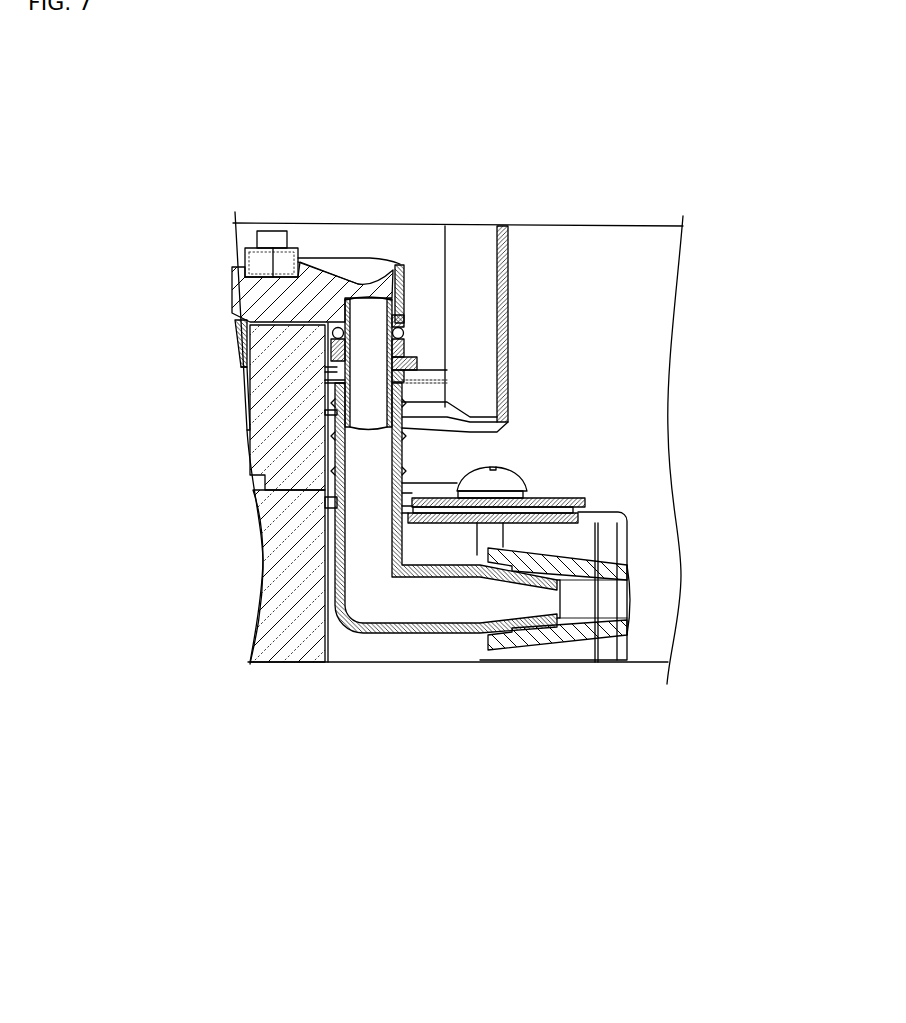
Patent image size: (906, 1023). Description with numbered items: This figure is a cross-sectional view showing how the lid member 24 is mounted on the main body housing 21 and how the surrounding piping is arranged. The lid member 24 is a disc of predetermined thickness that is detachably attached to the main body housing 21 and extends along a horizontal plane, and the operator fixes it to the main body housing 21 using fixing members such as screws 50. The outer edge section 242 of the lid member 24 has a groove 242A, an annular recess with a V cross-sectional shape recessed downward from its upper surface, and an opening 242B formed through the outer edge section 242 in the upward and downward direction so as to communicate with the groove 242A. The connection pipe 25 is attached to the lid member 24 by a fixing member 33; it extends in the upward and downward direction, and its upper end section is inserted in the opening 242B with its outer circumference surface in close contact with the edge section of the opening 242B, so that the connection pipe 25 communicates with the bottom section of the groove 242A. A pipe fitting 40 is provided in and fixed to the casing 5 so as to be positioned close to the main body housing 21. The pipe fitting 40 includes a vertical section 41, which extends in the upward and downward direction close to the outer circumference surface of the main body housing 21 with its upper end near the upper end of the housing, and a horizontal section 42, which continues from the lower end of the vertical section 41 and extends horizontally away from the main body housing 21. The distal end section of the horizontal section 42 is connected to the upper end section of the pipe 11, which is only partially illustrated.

The casing 5 is at (507, 333).
The pipe 11 is at (530, 645).
The main body housing 21 is at (290, 630).
The lid member 24 is at (402, 264).
The connection pipe 25 is at (407, 318).
The fixing member 33 is at (418, 363).
The pipe fitting 40 is at (403, 437).
The vertical section 41 is at (405, 463).
The horizontal section 42 is at (390, 662).
The screw 50 is at (251, 250).
The outer edge section 242 is at (310, 310).
The groove 242A is at (348, 268).
The opening 242B is at (404, 292).